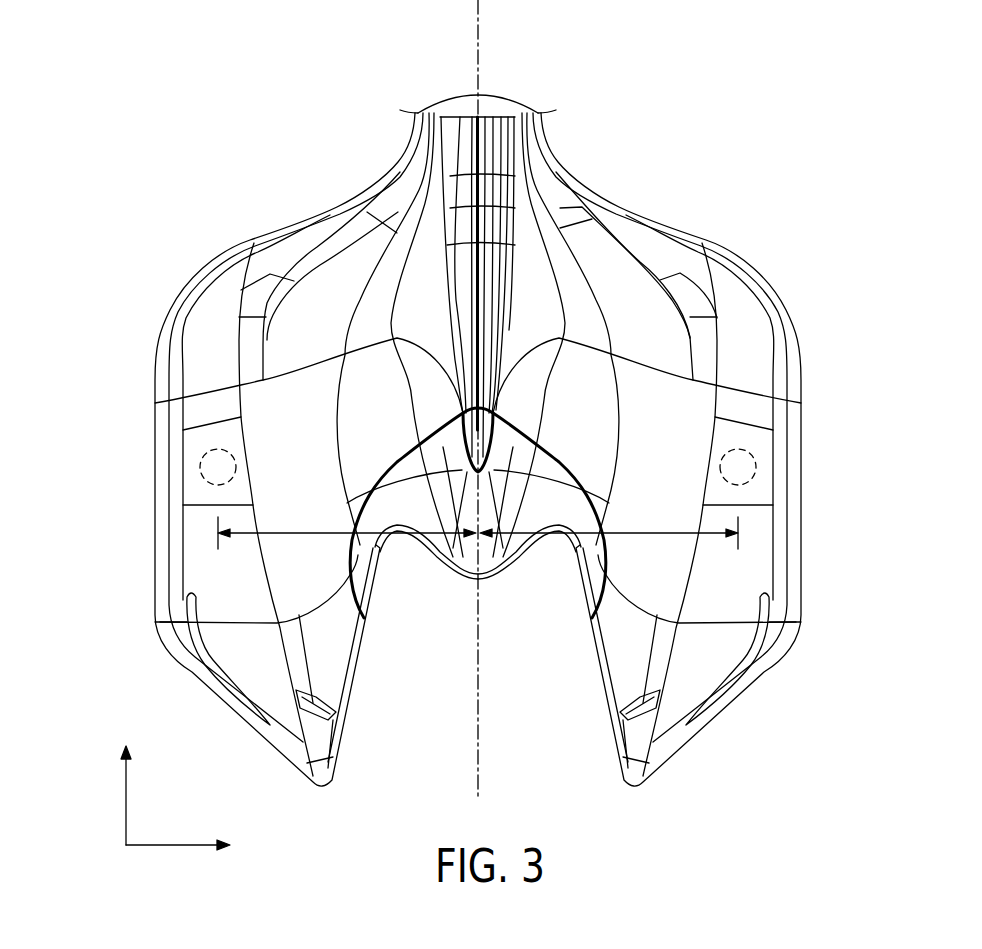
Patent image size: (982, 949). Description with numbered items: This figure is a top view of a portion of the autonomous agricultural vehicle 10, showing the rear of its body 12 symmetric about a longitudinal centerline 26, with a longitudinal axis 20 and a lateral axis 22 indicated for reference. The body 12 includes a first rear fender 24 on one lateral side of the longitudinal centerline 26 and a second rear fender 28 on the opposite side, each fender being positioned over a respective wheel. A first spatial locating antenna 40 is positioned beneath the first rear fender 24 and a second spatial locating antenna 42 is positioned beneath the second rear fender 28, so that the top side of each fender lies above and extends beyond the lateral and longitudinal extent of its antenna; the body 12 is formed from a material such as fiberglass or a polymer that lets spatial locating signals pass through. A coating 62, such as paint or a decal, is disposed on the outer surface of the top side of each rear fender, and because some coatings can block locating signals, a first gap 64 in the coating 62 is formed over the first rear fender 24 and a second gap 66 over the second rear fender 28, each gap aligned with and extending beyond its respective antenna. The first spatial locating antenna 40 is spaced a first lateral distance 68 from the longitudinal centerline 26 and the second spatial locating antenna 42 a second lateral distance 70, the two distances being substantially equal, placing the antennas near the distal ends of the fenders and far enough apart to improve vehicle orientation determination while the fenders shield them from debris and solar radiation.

The autonomous agricultural vehicle 10 is at (148, 245).
The body 12 is at (438, 128).
The longitudinal axis 20 is at (126, 800).
The lateral axis 22 is at (170, 850).
The first rear fender 24 is at (162, 517).
The longitudinal centerline 26 is at (480, 704).
The second rear fender 28 is at (795, 517).
The first spatial locating antenna 40 is at (203, 447).
The second spatial locating antenna 42 is at (756, 450).
The coating 62 is at (205, 358).
The first gap 64 is at (229, 432).
The second gap 66 is at (755, 432).
The first lateral distance 68 is at (318, 538).
The second lateral distance 70 is at (636, 538).